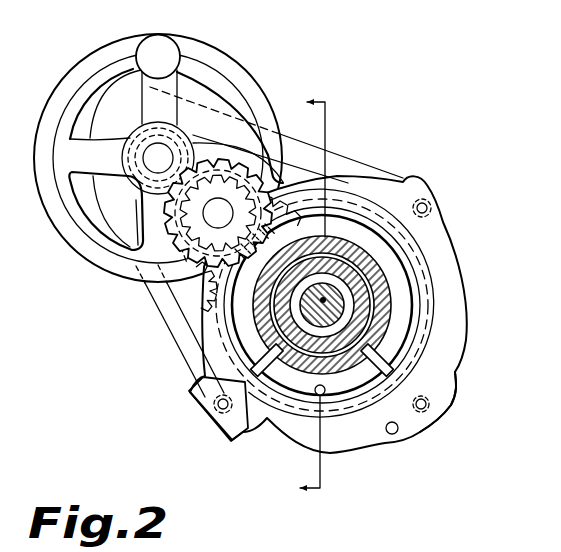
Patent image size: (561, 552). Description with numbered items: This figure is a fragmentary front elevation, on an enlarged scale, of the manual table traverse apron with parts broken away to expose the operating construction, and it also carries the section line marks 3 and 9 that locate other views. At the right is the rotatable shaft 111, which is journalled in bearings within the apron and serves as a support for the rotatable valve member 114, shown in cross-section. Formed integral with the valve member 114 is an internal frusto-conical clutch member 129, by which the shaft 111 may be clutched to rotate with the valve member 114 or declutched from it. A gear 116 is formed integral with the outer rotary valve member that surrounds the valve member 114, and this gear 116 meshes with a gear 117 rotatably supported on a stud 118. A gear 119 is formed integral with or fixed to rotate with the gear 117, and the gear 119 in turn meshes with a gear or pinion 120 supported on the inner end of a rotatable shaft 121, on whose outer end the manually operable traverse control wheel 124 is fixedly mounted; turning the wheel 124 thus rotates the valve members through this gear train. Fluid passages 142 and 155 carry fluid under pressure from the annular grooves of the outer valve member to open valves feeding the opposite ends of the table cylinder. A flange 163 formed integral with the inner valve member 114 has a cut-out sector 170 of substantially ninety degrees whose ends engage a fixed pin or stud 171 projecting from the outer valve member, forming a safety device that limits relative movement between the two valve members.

The traverse control wheel 124 is at (233, 70).
The rotatable shaft 121 is at (152, 148).
The gear or pinion 120 is at (173, 131).
The gear 119 is at (220, 158).
The stud 118 is at (212, 216).
The gear 117 is at (193, 228).
The gear 116 is at (298, 190).
The rotatable valve member 114 is at (352, 250).
The internal frusto-conical clutch member 129 is at (372, 289).
The rotatable shaft 111 is at (322, 303).
The longitudinally extending passage 142 is at (225, 377).
The longitudinally extending passage 155 is at (442, 392).
The cut-out sector 170 is at (272, 378).
The flange 163 is at (368, 372).
The fixed pin or stud 171 is at (312, 397).
The section line 3- 3 is at (314, 295).
The section line 9- 9 is at (272, 372).